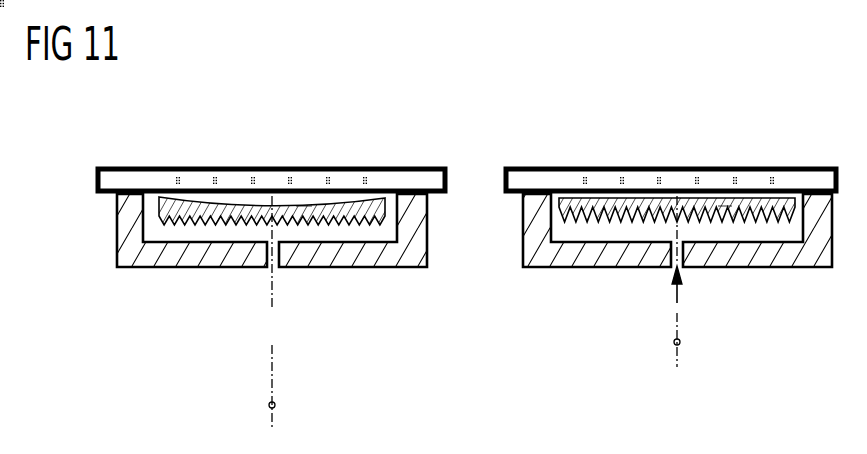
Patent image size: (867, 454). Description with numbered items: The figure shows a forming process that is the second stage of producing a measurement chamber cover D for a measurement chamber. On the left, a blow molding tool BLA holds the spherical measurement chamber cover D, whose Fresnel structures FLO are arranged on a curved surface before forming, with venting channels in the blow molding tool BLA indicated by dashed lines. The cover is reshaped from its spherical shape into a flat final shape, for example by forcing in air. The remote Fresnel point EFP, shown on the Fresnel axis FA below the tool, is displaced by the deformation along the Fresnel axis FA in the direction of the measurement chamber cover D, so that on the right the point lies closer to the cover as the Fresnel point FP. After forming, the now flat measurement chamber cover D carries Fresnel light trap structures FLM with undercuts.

The blow molding tool BLA is at (133, 191).
The lens with curved (optical) surface FLO is at (241, 210).
The Fresnel light trap structures FLM is at (641, 208).
The measurement chamber cover D is at (303, 205).
The Fresnel axis FA is at (475, 311).
The remote Fresnel point EFP is at (275, 405).
The focal point FP is at (680, 342).